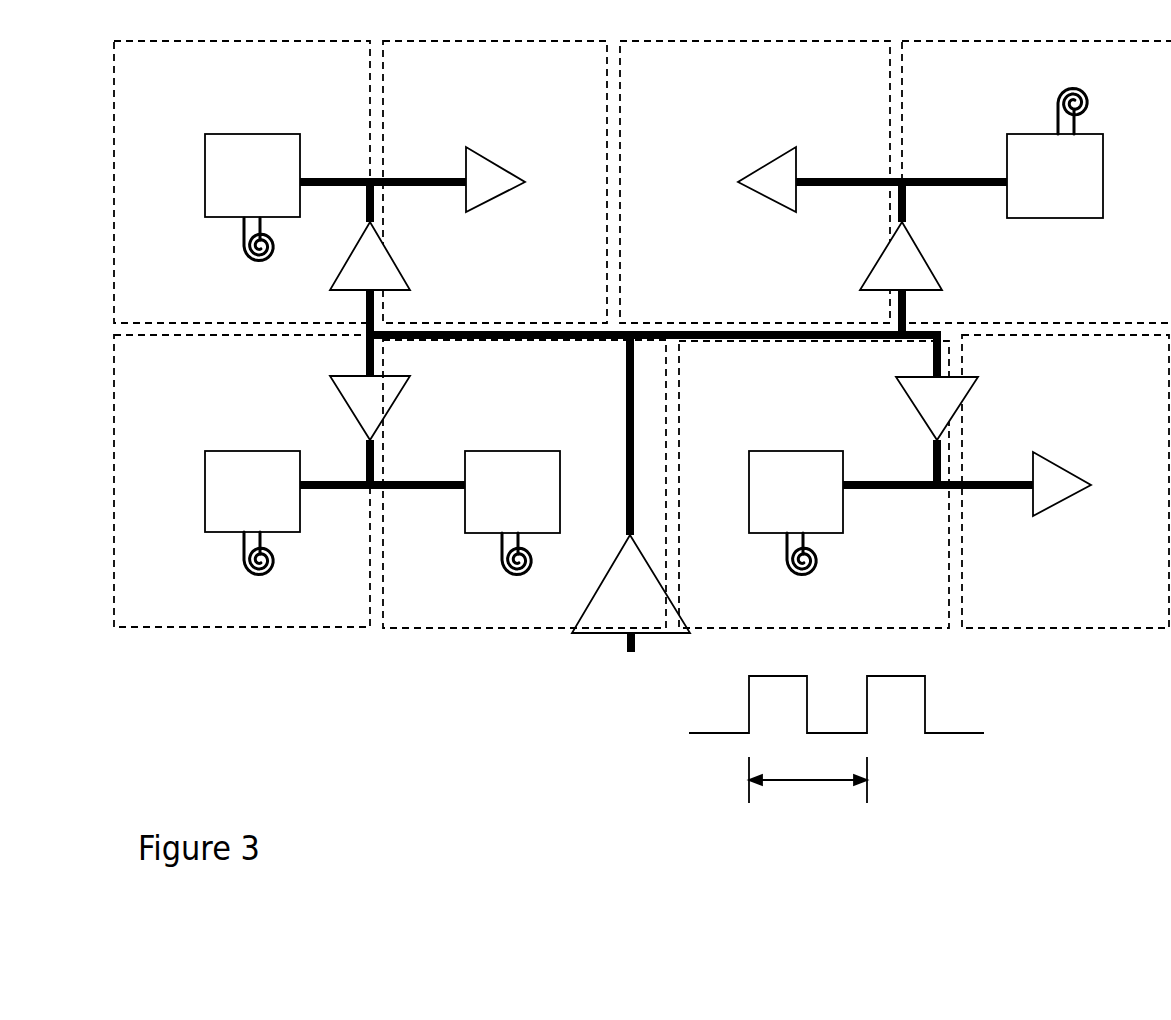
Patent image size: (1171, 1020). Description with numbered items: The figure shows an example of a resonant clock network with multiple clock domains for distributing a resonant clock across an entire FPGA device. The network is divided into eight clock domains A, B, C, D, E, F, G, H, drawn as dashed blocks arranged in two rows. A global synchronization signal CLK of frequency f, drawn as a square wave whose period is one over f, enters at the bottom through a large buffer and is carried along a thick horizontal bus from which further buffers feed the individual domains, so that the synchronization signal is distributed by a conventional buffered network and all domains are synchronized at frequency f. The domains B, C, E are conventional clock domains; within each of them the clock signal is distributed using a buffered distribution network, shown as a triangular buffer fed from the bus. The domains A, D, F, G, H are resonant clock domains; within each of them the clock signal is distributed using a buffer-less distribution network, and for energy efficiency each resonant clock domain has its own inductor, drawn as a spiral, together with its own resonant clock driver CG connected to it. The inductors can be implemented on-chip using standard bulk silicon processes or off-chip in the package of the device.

The resonant clock domain A is at (244, 182).
The conventional clock domain B is at (468, 182).
The conventional clock domain C is at (763, 182).
The resonant clock domain D is at (1015, 182).
The conventional clock domain E is at (1032, 481).
The resonant clock domain F is at (814, 484).
The resonant clock domain G is at (516, 484).
The resonant clock domain H is at (262, 481).
The global synchronization signal CLK is at (792, 763).